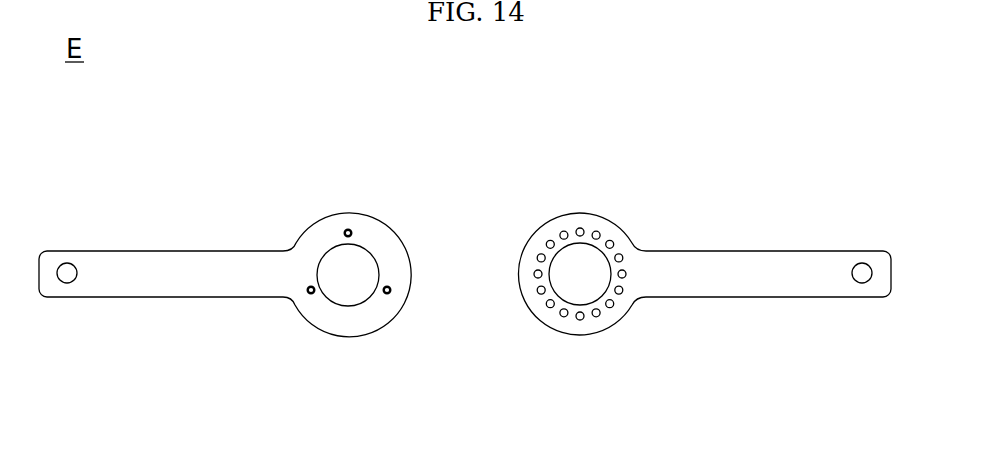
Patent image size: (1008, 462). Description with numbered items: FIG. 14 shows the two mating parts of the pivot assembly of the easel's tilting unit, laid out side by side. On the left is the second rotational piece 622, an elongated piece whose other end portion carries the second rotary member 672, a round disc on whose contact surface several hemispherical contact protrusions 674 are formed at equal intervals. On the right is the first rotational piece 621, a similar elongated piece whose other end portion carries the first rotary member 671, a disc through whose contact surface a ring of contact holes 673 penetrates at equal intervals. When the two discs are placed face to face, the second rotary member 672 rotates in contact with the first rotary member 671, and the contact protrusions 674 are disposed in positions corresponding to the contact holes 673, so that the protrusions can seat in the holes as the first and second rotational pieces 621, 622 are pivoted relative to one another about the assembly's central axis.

The first rotational piece 621 is at (778, 270).
The second rotational piece 622 is at (156, 283).
The first rotary member 671 is at (578, 327).
The second rotary member 672 is at (317, 235).
The contact holes 673 is at (612, 303).
The contact protrusions 674 is at (351, 229).